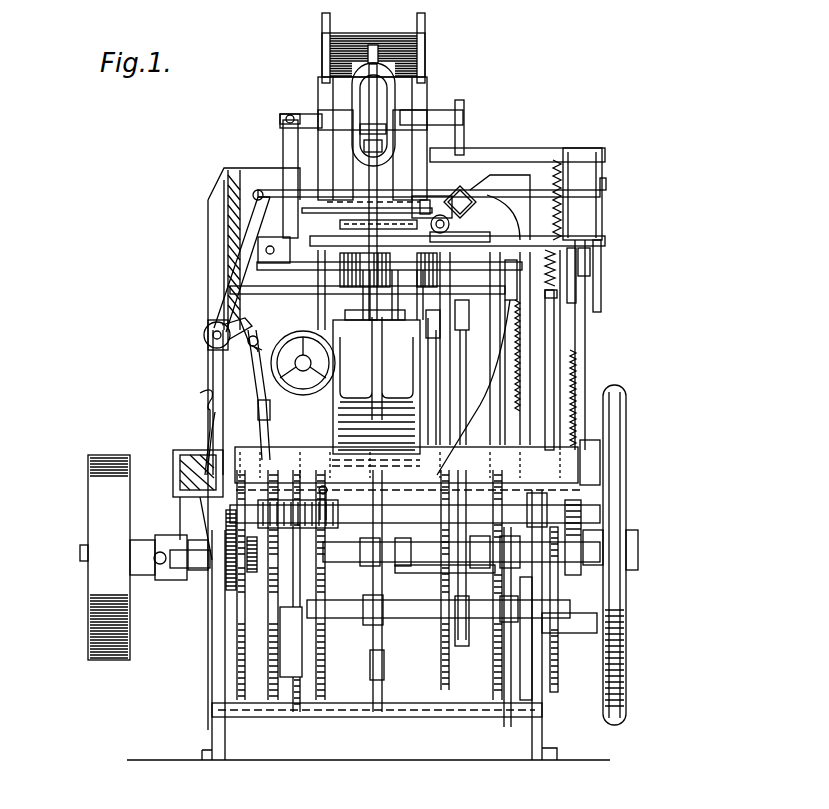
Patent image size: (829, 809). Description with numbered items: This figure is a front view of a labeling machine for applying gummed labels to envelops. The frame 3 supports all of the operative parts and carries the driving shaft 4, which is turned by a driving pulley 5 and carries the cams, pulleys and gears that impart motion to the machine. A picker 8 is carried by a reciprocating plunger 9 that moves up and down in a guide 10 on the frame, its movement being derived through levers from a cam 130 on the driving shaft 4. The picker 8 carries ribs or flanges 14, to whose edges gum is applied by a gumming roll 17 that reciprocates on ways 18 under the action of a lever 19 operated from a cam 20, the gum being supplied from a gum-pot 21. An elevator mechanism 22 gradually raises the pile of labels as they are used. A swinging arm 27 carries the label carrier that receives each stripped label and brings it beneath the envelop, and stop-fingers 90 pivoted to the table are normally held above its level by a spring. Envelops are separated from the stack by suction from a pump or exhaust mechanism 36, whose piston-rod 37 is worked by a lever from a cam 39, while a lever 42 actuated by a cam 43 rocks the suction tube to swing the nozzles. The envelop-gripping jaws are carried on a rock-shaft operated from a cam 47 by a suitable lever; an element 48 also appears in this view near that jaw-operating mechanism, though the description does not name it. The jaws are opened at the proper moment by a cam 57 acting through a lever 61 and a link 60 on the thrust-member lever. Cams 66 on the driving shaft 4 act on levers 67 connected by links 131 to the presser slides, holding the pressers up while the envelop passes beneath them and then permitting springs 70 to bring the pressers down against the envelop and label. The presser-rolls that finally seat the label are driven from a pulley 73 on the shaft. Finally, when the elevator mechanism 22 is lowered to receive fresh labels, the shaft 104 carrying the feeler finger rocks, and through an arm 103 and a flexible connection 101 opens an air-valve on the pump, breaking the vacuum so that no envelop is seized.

The frame 3 is at (205, 347).
The driving shaft 4 is at (410, 566).
The driving pulley 5 is at (88, 634).
The picker 8 is at (290, 190).
The reciprocating plunger 9 is at (382, 78).
The guide 10 is at (395, 102).
The ribs or flanges 14 is at (460, 225).
The gumming roll 17 is at (560, 213).
The ways 18 is at (425, 208).
The lever 19 is at (245, 248).
The cam 20 is at (220, 481).
The gum-pot 21 is at (555, 186).
The elevator mechanism 22 is at (275, 371).
The swinging arm 27 is at (373, 641).
The pump or exhaust mechanism 36 is at (600, 222).
The piston-rod 37 is at (578, 323).
The cam 39 is at (593, 577).
The lever 42 is at (200, 404).
The cam 43 is at (300, 577).
The cam 47 is at (496, 561).
The cam 48 is at (462, 190).
The cam 57 is at (243, 583).
The link 60 is at (255, 399).
The lever 61 is at (284, 140).
The cams 66 is at (445, 536).
The levers 67 is at (326, 499).
The springs 70 is at (322, 631).
The pulley 73 is at (490, 575).
The stop-fingers 90 is at (370, 582).
The flexible connection 101 is at (605, 239).
The arm 103 is at (598, 269).
The shaft 104 is at (585, 276).
The cam 130 is at (567, 540).
The links 131 is at (325, 529).